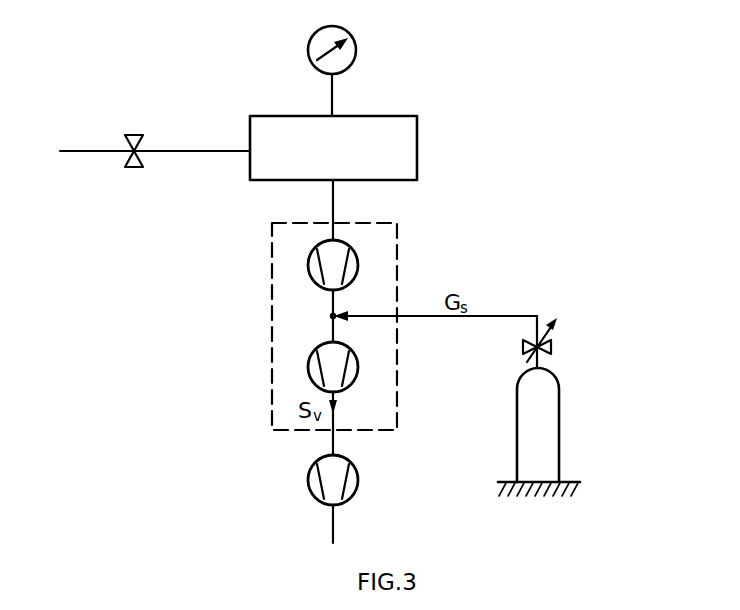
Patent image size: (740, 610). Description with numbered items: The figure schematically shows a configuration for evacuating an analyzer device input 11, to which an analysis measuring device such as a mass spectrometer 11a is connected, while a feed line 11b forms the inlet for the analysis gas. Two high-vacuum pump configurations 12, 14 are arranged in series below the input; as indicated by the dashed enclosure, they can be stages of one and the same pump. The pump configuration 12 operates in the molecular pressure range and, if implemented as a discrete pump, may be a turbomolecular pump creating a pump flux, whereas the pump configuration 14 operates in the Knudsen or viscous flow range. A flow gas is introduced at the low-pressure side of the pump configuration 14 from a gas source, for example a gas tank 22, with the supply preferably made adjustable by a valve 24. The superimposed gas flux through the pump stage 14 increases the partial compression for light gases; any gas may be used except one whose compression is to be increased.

The analyzer device input 11 is at (417, 135).
The mass spectrometer 11a is at (352, 30).
The feed line 11b is at (167, 151).
The high-vacuum pump configuration 12 is at (357, 263).
The high-vacuum pump configuration 14 is at (357, 364).
The gas tank 22 is at (559, 406).
The valve 24 is at (553, 338).